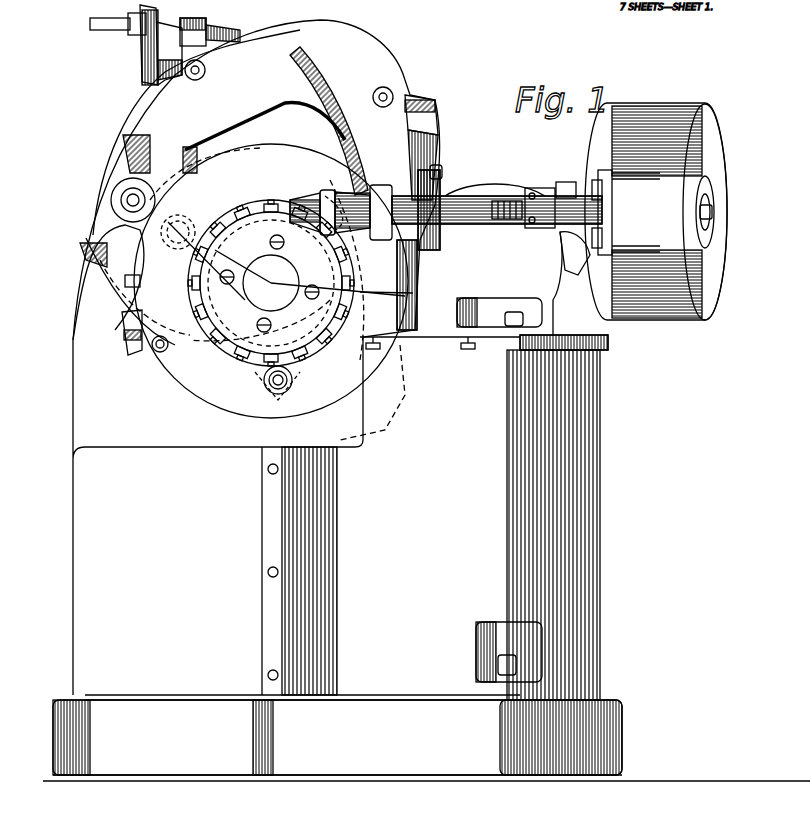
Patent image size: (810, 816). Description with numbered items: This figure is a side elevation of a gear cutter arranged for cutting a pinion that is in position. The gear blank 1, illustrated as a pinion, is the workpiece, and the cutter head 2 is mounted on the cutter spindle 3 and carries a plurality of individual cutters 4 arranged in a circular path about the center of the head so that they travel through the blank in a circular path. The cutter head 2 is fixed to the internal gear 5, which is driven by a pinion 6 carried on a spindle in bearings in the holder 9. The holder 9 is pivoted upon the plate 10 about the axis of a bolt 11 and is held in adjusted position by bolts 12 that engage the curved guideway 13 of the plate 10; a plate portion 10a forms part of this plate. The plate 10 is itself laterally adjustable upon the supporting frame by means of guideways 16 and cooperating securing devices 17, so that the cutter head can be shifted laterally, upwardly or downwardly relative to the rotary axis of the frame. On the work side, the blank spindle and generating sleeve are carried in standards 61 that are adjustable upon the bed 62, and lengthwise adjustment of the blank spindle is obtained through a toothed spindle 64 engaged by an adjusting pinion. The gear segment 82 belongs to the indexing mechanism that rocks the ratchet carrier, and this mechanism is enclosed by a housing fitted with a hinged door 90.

The gear blank 1 is at (306, 200).
The cutter head 2 is at (271, 283).
The cutter spindle 3 is at (310, 280).
The cutters 4 is at (306, 322).
The internal gear 5 is at (271, 302).
The pinion 6 is at (203, 245).
The holder 9 is at (97, 242).
The plate 10 is at (340, 360).
The frame plate 10a is at (75, 187).
The bolt 11 is at (130, 196).
The bolts 12 is at (285, 385).
The guideway 13 is at (333, 78).
The guideways 16 is at (131, 345).
The securing devices 17 is at (194, 80).
The standards 61 is at (488, 195).
The bed 62 is at (405, 345).
The spindle 64 is at (500, 226).
The gear segment 82 is at (605, 170).
The hinged door 90 is at (710, 150).